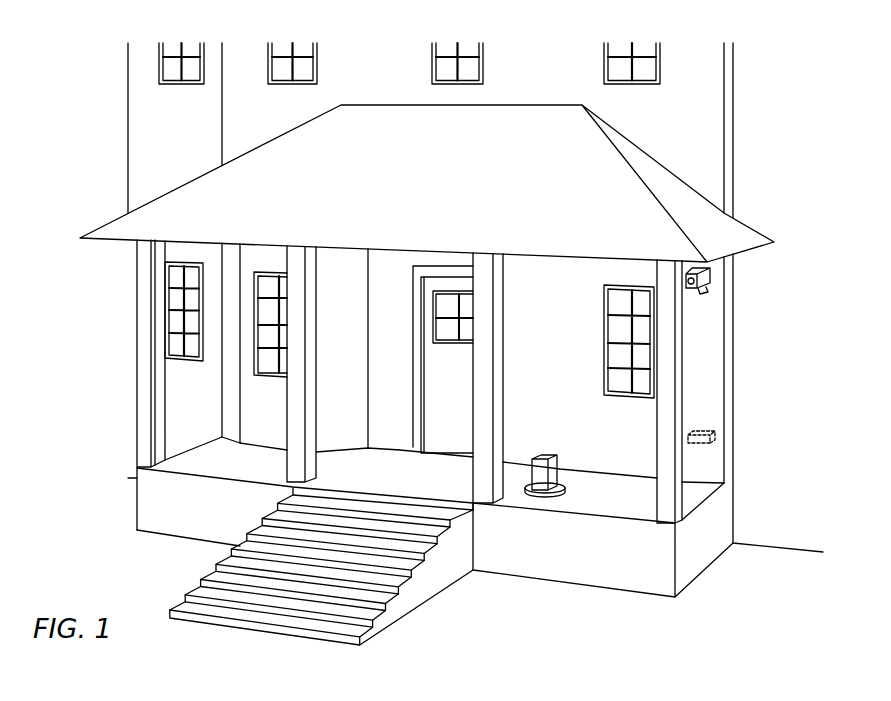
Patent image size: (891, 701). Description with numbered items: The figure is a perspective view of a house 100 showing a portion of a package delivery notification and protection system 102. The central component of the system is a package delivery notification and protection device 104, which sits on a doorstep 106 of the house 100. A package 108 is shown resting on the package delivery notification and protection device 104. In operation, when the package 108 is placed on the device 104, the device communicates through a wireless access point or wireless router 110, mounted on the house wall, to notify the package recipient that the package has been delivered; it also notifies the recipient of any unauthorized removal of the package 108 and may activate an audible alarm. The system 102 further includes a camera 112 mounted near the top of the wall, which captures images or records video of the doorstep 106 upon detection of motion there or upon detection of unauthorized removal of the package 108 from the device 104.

The house 100 is at (95, 165).
The package delivery notification and protection system 102 is at (752, 390).
The package delivery notification and protection device 104 is at (527, 497).
The doorstep 106 is at (428, 485).
The package 108 is at (555, 472).
The wireless access point or wireless router 110 is at (717, 436).
The camera 112 is at (710, 277).